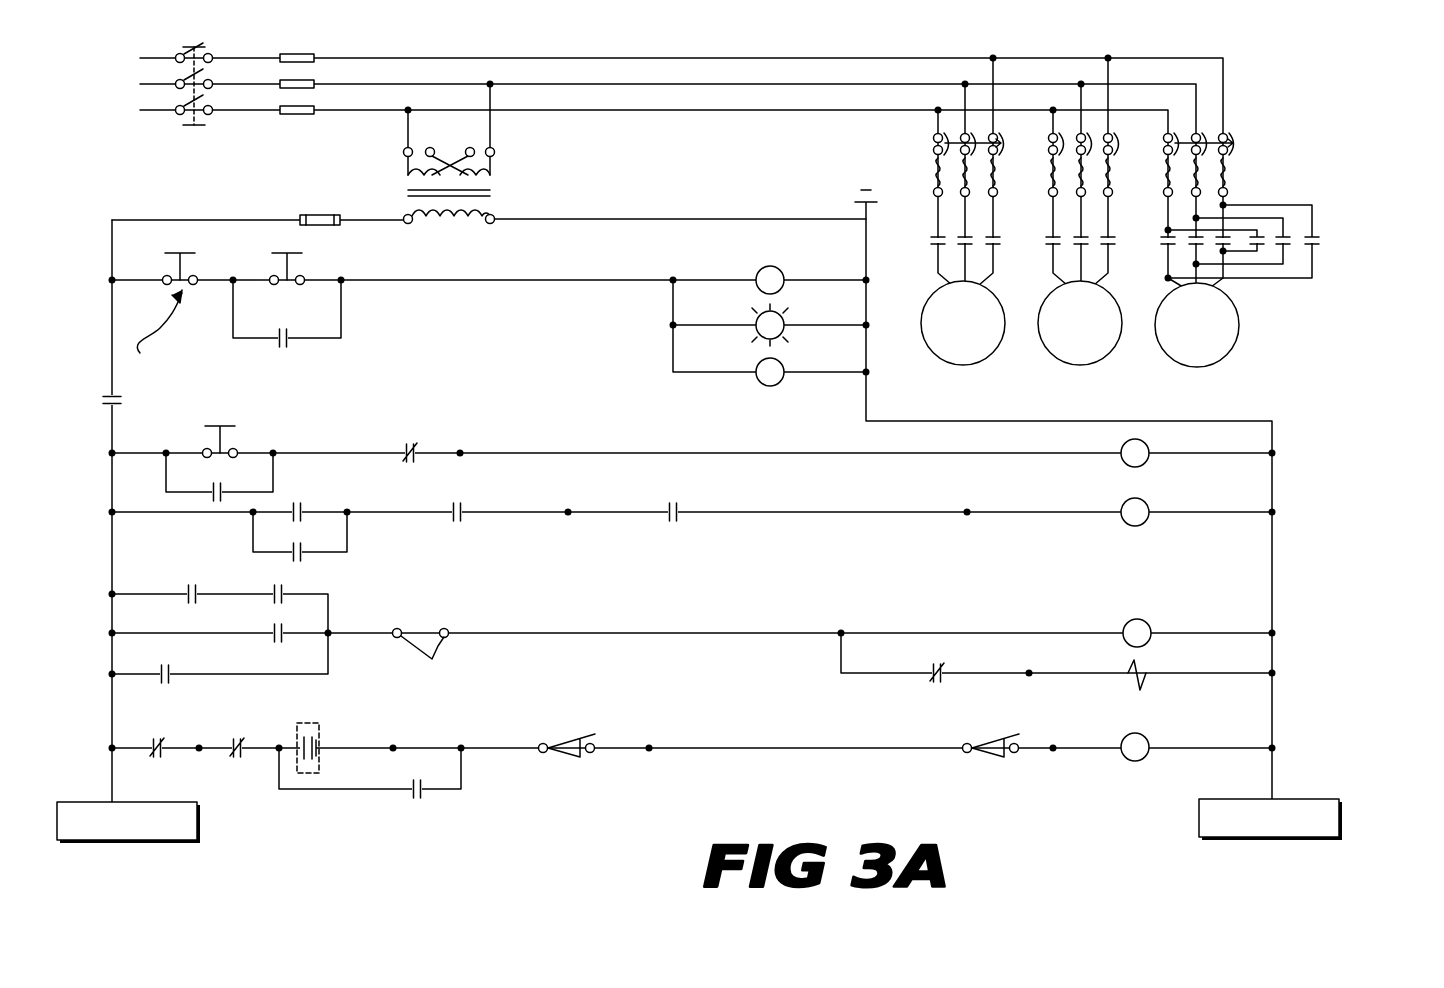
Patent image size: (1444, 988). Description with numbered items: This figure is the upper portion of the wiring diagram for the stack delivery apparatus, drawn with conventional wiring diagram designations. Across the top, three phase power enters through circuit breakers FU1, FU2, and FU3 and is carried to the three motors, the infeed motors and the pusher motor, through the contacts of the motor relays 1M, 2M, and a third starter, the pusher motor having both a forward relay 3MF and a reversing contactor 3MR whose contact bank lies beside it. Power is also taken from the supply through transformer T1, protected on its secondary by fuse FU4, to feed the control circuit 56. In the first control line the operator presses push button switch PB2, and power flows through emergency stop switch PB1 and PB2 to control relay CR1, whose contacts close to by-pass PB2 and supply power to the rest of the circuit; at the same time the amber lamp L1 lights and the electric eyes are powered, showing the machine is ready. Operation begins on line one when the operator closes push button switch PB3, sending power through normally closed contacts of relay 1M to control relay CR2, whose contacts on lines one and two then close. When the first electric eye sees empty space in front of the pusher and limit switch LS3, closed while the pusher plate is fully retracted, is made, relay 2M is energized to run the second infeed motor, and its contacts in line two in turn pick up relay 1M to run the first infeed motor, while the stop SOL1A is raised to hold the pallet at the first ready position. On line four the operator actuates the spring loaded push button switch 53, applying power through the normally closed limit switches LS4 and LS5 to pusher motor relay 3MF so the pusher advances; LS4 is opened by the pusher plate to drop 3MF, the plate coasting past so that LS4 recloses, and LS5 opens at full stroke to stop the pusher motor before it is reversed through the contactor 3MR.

The control circuit 56 is at (80, 339).
The switch 53 is at (318, 754).
The circuit breaker FU1 is at (302, 47).
The circuit breaker FU2 is at (302, 73).
The circuit breaker FU3 is at (302, 99).
The control fuse FU4 is at (320, 198).
The transformer T1 is at (464, 156).
The emergency stop switch PB1 is at (182, 258).
The push button switch PB2 is at (304, 257).
The push button switch PB3 is at (226, 433).
The control relay CR1 is at (779, 273).
The control relay CR2 is at (1160, 447).
The amber lamp L1 is at (830, 325).
The control relay 1M is at (1156, 506).
The control relay 2M is at (1161, 627).
The pusher motor relay 3MF is at (1160, 741).
The pusher reverse contactor 3MR is at (1292, 242).
The limit switch LS3 is at (495, 636).
The limit switch LS4 is at (596, 753).
The limit switch LS5 is at (990, 743).
The stop SOL1A is at (1181, 667).